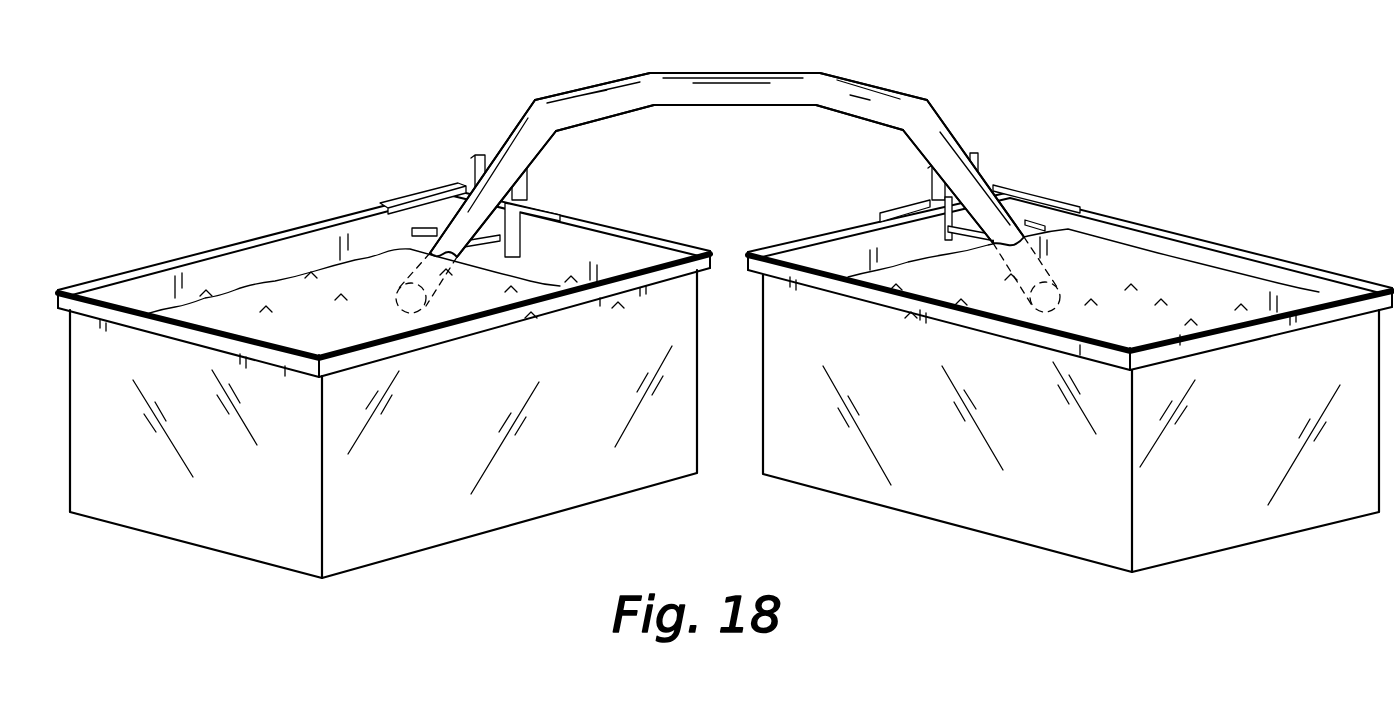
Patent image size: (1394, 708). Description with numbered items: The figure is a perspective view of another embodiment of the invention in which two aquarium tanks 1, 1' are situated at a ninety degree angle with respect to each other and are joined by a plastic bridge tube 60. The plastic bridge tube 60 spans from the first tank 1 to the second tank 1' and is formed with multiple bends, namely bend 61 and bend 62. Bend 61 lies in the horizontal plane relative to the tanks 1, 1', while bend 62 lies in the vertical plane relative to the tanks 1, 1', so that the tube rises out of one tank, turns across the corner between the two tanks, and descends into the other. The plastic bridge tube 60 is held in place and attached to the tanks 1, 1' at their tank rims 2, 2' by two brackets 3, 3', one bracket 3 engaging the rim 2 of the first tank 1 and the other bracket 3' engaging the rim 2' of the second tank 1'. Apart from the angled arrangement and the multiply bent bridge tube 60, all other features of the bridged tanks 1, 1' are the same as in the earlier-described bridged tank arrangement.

The aquarium tank 1 is at (383, 384).
The tank rim 2 is at (384, 283).
The bracket 3 is at (481, 206).
The aquarium tank 1' is at (1071, 369).
The tank rim 2' is at (1071, 281).
The bracket 3' is at (980, 176).
The plastic bridge tube 60 is at (722, 75).
The bend 61 is at (650, 80).
The bend 62 is at (543, 100).